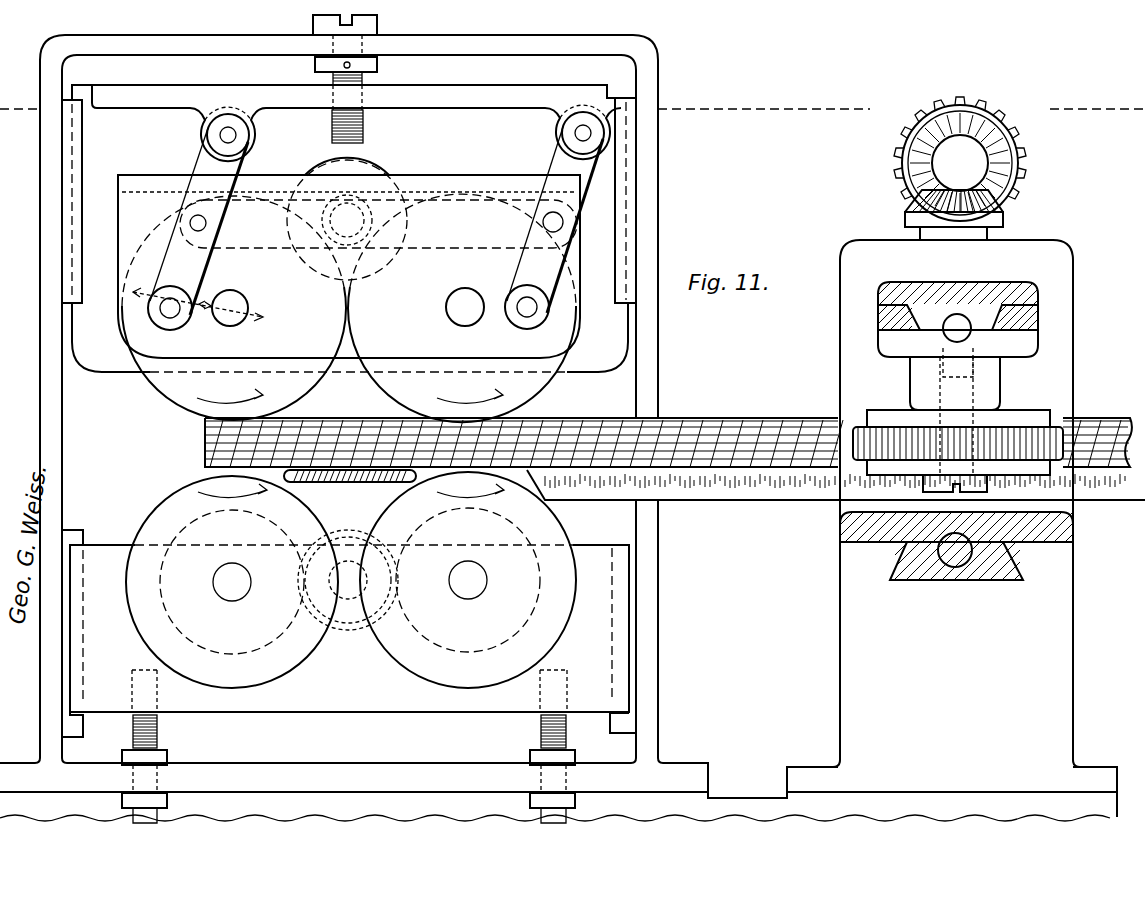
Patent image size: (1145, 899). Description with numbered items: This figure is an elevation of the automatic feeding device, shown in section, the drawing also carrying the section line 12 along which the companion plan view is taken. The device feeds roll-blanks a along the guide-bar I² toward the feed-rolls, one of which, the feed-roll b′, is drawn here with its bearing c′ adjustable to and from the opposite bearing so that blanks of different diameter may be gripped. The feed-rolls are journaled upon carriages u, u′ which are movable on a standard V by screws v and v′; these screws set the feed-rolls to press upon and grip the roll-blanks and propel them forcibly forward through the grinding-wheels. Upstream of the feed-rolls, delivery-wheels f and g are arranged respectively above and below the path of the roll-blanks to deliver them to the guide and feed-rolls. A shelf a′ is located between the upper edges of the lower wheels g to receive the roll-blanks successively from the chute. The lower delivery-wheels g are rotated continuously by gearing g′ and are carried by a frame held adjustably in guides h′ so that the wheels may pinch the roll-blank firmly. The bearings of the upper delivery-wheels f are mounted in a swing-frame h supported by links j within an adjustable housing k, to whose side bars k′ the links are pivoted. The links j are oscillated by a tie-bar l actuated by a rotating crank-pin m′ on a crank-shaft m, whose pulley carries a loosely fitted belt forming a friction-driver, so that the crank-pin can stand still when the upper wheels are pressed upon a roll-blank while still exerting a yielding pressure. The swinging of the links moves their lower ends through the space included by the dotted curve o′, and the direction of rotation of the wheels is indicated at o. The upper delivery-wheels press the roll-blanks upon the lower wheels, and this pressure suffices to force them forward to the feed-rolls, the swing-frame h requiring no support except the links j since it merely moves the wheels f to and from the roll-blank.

The section line 12— 12 is at (572, 108).
The adjustable housing k is at (115, 87).
The vertical frame bars k′ is at (622, 175).
The swing-frame h is at (145, 176).
The upper delivery-wheels f is at (314, 383).
The crank-pin m′ is at (312, 250).
The crank-shaft m is at (350, 218).
The tie-bar l is at (228, 248).
The links j is at (245, 165).
The dotted curve of link movement o′ is at (147, 332).
The direction of rotation o is at (213, 492).
The guides h′ is at (72, 533).
The gearing g′ is at (158, 582).
The lower delivery-wheels g is at (377, 648).
The roll-blanks a is at (203, 440).
The shelf a′ is at (348, 487).
The standard V is at (952, 503).
The carriage u is at (1053, 272).
The carriage u′ is at (1017, 340).
The screw v′ is at (962, 330).
The screw v is at (940, 575).
The bearing c′ is at (973, 382).
The feed-roll b′ is at (905, 440).